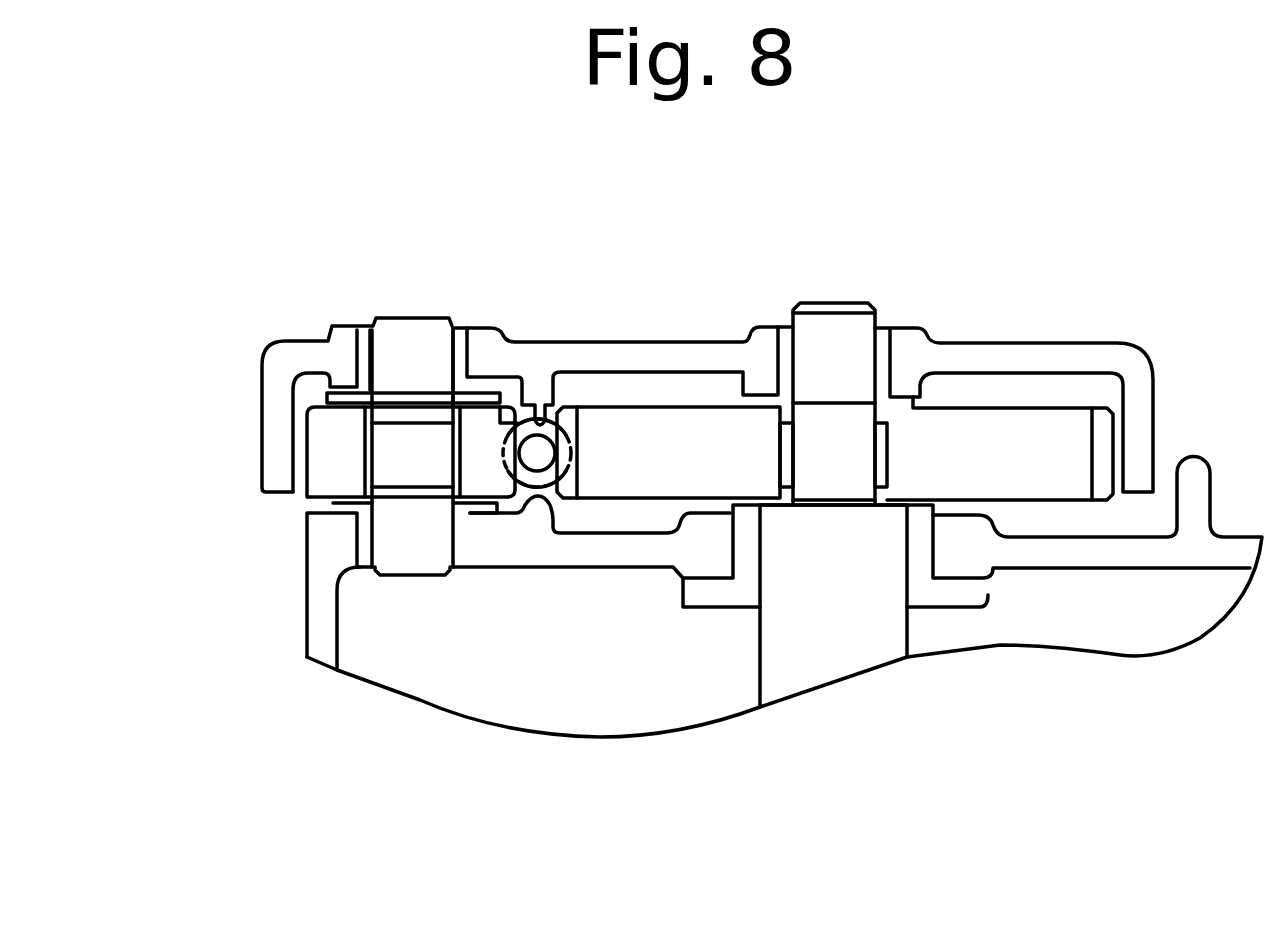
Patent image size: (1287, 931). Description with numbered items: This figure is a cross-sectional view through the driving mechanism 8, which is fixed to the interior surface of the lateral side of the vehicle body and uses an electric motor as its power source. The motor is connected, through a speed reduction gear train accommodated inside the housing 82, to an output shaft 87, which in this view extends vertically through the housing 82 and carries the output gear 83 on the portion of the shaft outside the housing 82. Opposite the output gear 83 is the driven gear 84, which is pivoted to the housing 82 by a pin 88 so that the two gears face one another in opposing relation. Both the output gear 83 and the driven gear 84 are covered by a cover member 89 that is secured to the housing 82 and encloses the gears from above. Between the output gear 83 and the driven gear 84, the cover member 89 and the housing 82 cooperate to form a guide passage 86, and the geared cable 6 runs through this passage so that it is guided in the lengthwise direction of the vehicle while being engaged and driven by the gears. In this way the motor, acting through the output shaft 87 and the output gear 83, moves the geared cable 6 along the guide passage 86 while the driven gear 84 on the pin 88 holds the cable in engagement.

The driving mechanism 8 is at (240, 356).
The pin 88 is at (408, 350).
The driven gear 84 is at (340, 445).
The guide passage 86 is at (540, 425).
The geared cable 6 is at (538, 478).
The output gear 83 is at (685, 433).
The output shaft 87 is at (848, 652).
The cover member 89 is at (998, 355).
The housing 82 is at (1092, 560).